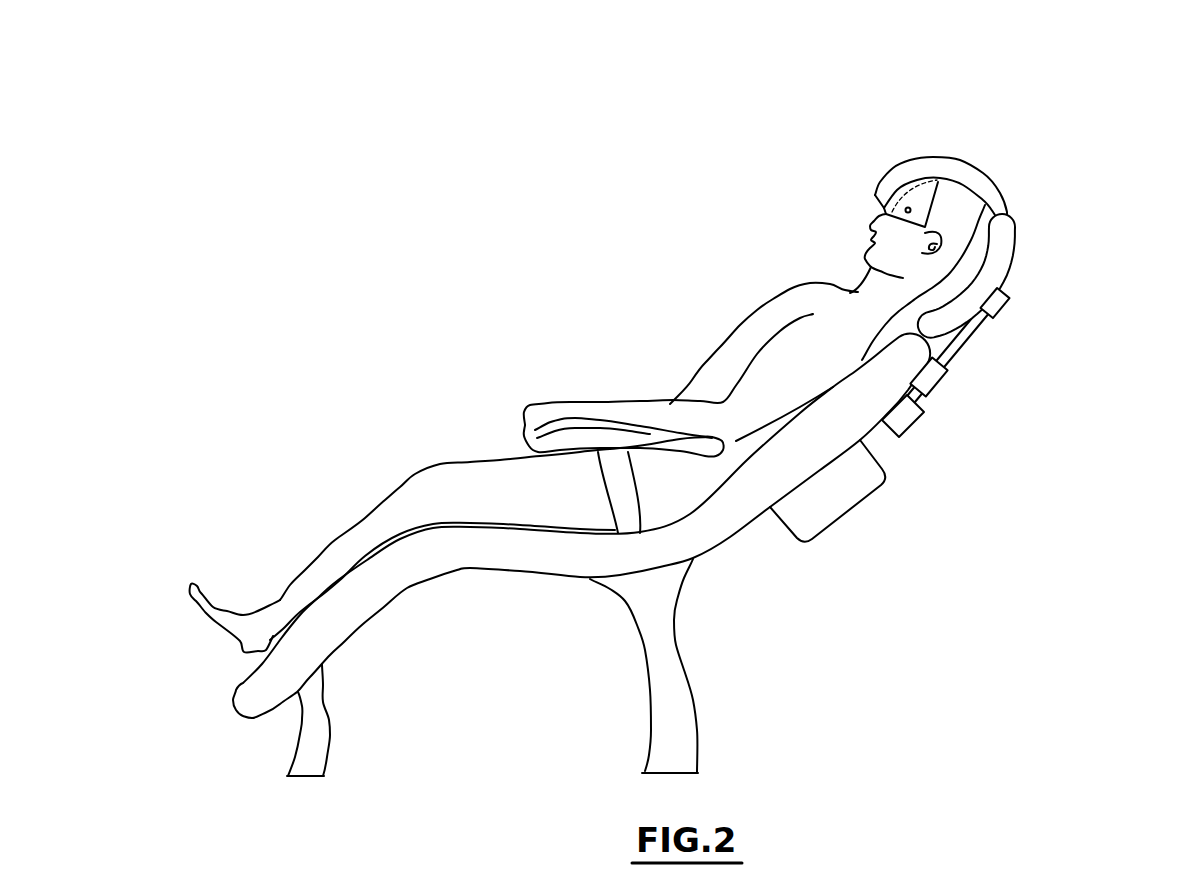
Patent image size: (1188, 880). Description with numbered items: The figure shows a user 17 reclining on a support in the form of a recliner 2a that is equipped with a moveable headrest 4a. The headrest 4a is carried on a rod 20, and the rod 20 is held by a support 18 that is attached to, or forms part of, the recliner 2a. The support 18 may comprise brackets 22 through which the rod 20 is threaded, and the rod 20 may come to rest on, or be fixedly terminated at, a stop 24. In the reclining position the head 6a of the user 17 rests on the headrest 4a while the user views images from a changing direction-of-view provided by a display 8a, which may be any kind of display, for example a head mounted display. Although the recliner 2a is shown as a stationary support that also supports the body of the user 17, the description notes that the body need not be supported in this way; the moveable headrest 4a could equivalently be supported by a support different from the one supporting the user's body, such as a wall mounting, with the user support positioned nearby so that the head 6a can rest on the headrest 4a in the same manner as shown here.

The recliner 2a is at (497, 574).
The moveable headrest 4a is at (1016, 243).
The head 6a is at (869, 233).
The display 8a is at (892, 164).
The user 17 is at (493, 458).
The support 18 is at (938, 432).
The rod 20 is at (1013, 306).
The brackets 22 is at (950, 381).
The stop 24 is at (838, 544).